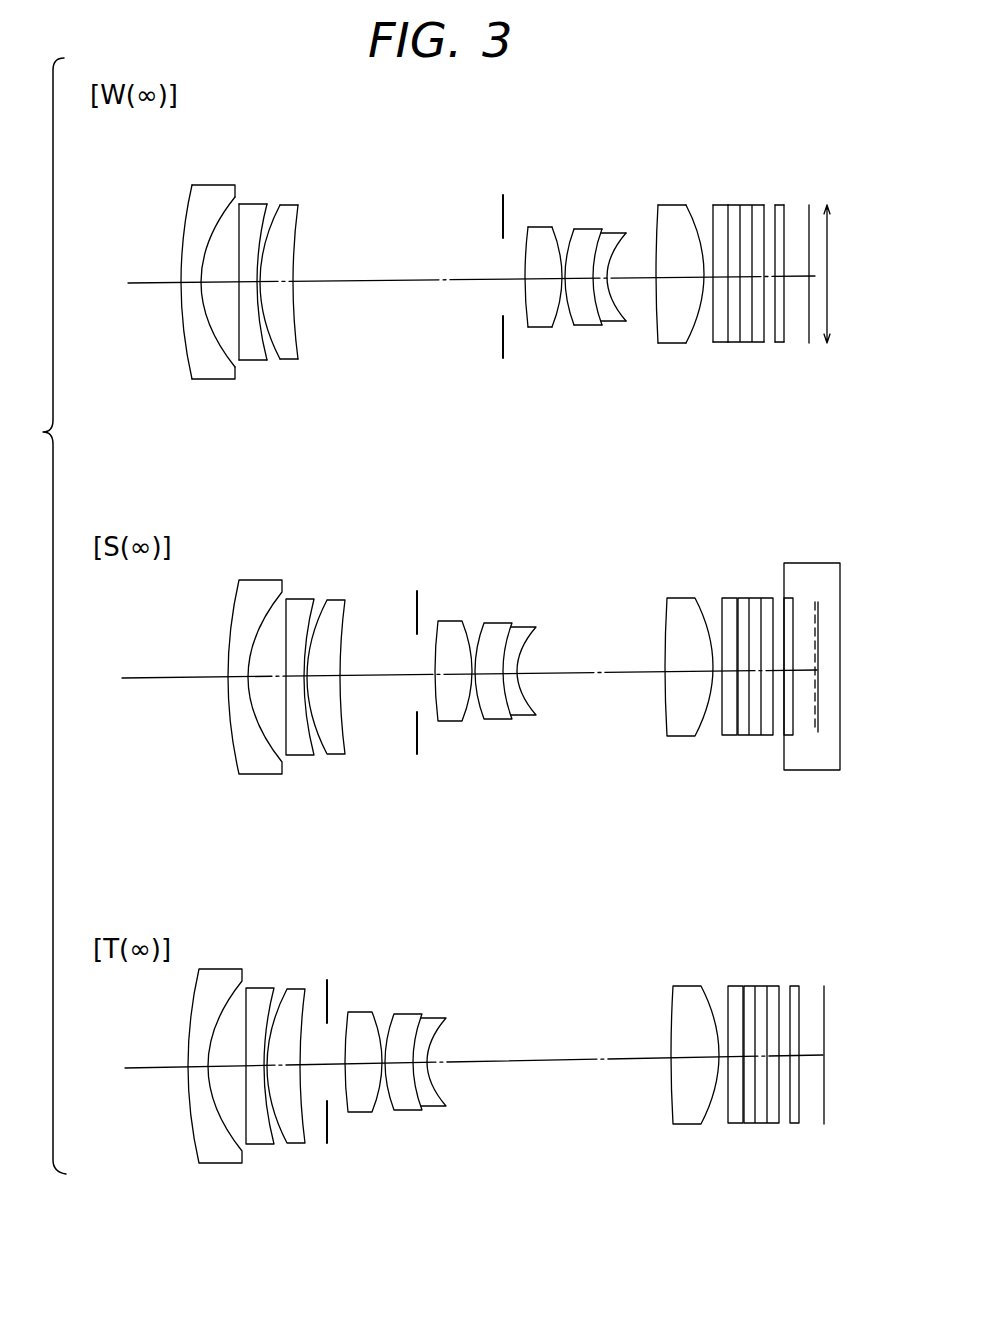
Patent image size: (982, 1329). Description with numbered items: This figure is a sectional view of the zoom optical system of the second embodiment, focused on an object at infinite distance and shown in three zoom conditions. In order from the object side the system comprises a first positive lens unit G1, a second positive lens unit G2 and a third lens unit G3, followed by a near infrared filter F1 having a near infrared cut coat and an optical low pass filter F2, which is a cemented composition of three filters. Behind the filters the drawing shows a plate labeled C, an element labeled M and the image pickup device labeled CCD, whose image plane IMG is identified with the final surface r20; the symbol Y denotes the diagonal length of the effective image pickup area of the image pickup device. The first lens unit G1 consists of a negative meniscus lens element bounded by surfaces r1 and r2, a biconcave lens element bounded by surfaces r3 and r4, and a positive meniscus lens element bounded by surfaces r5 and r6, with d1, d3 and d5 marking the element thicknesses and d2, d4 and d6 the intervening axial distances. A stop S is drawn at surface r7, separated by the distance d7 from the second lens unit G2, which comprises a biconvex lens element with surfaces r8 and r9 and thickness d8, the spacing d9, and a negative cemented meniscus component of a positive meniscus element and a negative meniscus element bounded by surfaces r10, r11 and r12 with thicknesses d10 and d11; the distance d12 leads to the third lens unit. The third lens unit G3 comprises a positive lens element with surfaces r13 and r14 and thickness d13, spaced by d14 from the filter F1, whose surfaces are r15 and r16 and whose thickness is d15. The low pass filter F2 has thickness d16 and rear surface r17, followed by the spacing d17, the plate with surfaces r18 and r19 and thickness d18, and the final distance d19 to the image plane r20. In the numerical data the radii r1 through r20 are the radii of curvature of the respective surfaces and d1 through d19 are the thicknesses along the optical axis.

The radius of curvature of first lens surface r1 is at (189, 202).
The radius of curvature of second lens surface r2 is at (221, 215).
The radius of curvature of third lens surface r3 is at (242, 203).
The radius of curvature of fourth lens surface r4 is at (264, 203).
The radius of curvature of fifth lens surface r5 is at (280, 204).
The radius of curvature of sixth lens surface r6 is at (299, 205).
The radius of curvature of seventh surface r7 is at (503, 210).
The radius of curvature of eighth lens surface r8 is at (528, 227).
The radius of curvature of ninth lens surface r9 is at (551, 227).
The radius of curvature of tenth lens surface r10 is at (573, 229).
The radius of curvature of eleventh lens surface r11 is at (601, 230).
The radius of curvature of twelfth lens surface r12 is at (626, 231).
The radius of curvature of thirteenth lens surface r13 is at (658, 206).
The radius of curvature of fourteenth lens surface r14 is at (690, 206).
The radius of curvature of fifteenth surface r15 is at (713, 205).
The radius of curvature of sixteenth surface r16 is at (728, 205).
The radius of curvature of seventeenth surface r17 is at (764, 205).
The radius of curvature of eighteenth surface r18 is at (775, 206).
The radius of curvature of nineteenth surface r19 is at (786, 206).
The radius of curvature of twentieth surface r20 is at (810, 206).
The thickness of first lens element d1 is at (202, 379).
The second axial thickness d2 is at (236, 374).
The thickness of second lens element d3 is at (255, 362).
The fourth axial thickness d4 is at (262, 281).
The thickness of third lens element d5 is at (292, 358).
The sixth axial thickness d6 is at (383, 284).
The seventh axial thickness d7 is at (512, 280).
The thickness of biconvex lens element d8 is at (533, 327).
The ninth axial thickness d9 is at (565, 324).
The thickness of positive meniscus lens element d10 is at (585, 327).
The thickness of negative meniscus lens element d11 is at (609, 324).
The twelfth axial thickness d12 is at (632, 318).
The thickness of third lens unit element d13 is at (658, 344).
The fourteenth axial thickness d14 is at (701, 346).
The thickness of near infrared filter d15 is at (718, 343).
The thickness of optical low pass filter d16 is at (755, 344).
The seventeenth axial thickness d17 is at (773, 344).
The eighteenth axial thickness d18 is at (778, 344).
The nineteenth axial thickness d19 is at (799, 344).
The first lens unit G1 is at (360, 779).
The second lens unit G2 is at (547, 743).
The third lens unit G3 is at (680, 737).
The aperture stop S is at (417, 732).
The near infrared filter F1 is at (730, 737).
The optical low pass filter F2 is at (773, 746).
The cover glass C is at (784, 610).
The image pickup surface M is at (808, 712).
The CCD image sensor CCD is at (823, 771).
The image plane IMG is at (816, 602).
The diagonal length of effective image pickup area Y is at (834, 274).